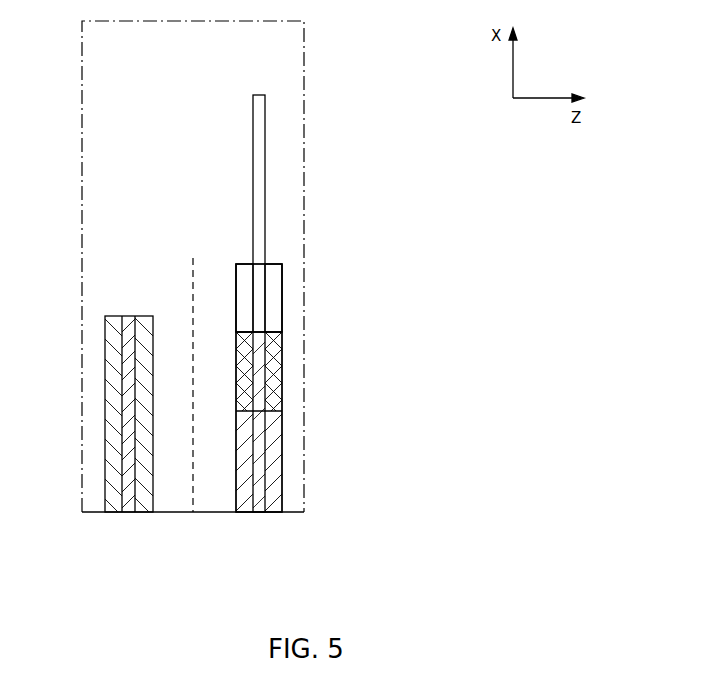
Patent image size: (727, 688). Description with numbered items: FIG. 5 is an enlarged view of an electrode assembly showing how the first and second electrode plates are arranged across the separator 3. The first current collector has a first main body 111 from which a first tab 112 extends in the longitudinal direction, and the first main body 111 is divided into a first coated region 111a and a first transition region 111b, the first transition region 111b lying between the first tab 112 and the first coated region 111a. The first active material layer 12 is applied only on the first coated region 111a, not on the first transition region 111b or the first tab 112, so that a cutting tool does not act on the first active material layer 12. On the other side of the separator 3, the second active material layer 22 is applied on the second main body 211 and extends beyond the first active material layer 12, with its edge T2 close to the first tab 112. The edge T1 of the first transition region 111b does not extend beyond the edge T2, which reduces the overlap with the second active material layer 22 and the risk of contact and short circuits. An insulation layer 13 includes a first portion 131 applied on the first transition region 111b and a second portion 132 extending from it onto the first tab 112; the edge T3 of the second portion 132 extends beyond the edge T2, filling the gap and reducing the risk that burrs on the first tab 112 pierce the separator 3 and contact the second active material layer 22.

The separator 3 is at (193, 482).
The first active material layer 12 is at (236, 492).
The insulation layer 13 is at (375, 280).
The first portion 131 is at (278, 352).
The second portion 132 is at (277, 300).
The first main body 111 is at (385, 386).
The first coated region 111a is at (272, 463).
The first transition region 111b is at (280, 371).
The first tab 112 is at (255, 132).
The second active material layer 22 is at (110, 442).
The second main body 211 is at (130, 513).
The edge of the first transition region T1 is at (258, 328).
The edge of the second active material layer T2 is at (143, 316).
The edge of the second portion T3 is at (244, 263).